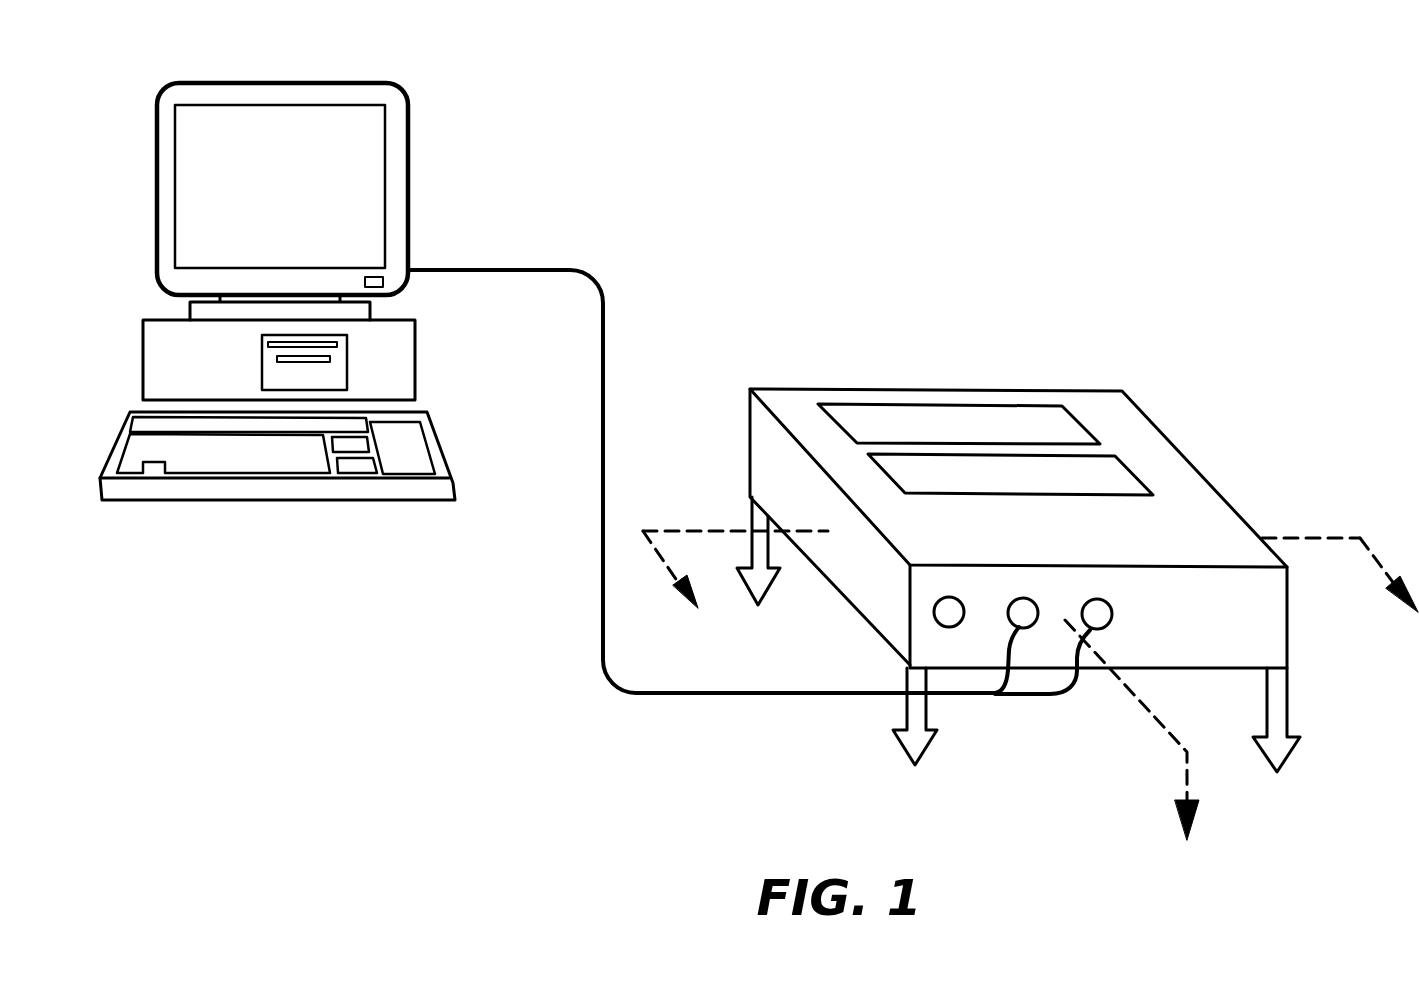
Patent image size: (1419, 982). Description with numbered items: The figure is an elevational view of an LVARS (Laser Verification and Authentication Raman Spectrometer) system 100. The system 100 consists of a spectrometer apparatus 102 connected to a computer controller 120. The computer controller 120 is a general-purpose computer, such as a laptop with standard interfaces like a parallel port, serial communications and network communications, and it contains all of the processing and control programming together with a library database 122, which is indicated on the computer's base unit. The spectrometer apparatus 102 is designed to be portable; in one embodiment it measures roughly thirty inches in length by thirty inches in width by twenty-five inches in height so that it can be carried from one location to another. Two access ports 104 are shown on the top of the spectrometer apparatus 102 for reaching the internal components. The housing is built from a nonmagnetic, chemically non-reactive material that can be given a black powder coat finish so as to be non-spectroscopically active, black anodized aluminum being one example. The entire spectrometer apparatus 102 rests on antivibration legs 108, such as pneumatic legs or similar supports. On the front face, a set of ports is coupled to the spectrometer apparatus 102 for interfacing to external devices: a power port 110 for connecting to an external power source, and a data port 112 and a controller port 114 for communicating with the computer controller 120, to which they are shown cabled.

The LVARS system 100 is at (661, 857).
The spectrometer apparatus 102 is at (1183, 480).
The access ports 104 is at (1080, 420).
The antivibration legs 108 is at (900, 703).
The power port 110 is at (949, 597).
The data port 112 is at (1023, 597).
The controller port 114 is at (1097, 597).
The computer controller 120 is at (360, 83).
The library database 122 is at (347, 372).